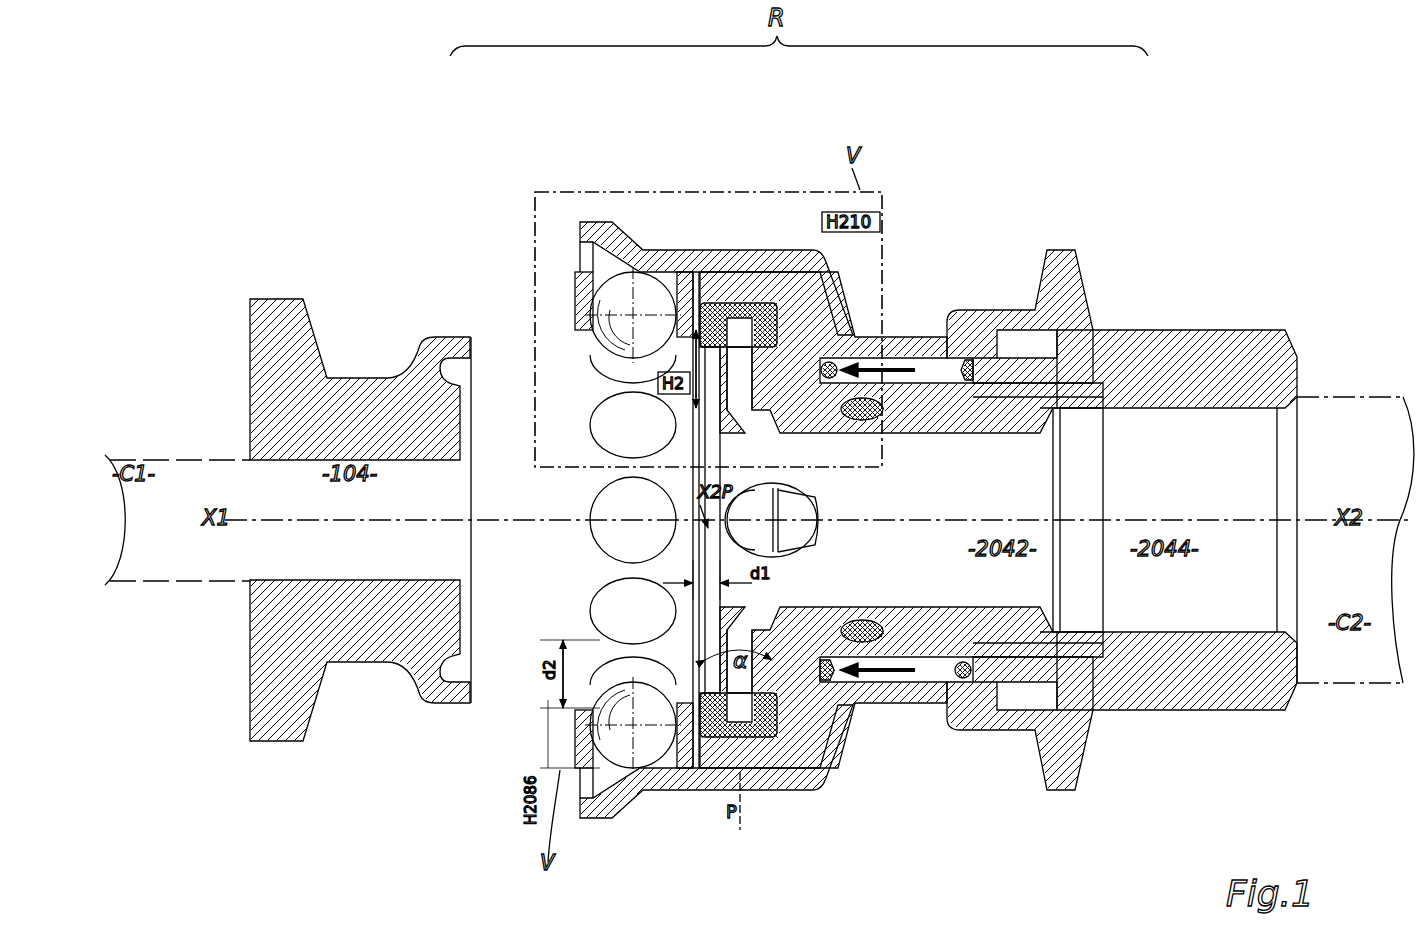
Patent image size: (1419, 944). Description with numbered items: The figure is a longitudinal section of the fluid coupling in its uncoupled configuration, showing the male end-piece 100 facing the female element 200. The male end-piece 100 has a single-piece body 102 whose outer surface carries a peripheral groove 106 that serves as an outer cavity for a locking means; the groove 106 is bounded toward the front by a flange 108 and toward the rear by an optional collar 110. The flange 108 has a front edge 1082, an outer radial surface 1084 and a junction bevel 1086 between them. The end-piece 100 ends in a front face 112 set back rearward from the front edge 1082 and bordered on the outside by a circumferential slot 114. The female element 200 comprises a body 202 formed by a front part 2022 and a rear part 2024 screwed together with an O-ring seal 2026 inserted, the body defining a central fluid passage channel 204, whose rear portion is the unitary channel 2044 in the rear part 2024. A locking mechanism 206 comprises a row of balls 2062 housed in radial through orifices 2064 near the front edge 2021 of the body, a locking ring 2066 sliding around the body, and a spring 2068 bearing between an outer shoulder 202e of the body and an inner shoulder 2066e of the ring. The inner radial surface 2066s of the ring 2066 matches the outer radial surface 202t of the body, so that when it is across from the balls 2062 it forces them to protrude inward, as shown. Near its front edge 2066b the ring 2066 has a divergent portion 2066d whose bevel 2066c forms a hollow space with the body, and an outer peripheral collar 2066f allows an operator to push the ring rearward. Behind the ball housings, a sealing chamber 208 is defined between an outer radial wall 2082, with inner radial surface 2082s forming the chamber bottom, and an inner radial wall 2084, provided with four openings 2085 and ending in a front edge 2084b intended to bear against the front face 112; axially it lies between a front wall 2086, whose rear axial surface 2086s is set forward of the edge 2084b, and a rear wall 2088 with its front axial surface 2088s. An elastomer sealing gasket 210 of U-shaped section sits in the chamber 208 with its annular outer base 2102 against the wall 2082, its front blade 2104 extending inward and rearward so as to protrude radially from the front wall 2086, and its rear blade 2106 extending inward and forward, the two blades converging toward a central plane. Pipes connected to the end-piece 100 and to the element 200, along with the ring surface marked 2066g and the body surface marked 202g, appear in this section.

The male end-piece 100 is at (352, 206).
The female element 200 is at (1014, 202).
The body 102 is at (270, 650).
The peripheral groove 106 is at (358, 702).
The flange 108 is at (470, 334).
The collar 110 is at (278, 306).
The front face 112 is at (466, 628).
The circumferential slot 114 is at (456, 376).
The front edge of the flange 1082 is at (503, 708).
The outer radial surface of the flange 1084 is at (441, 708).
The junction bevel 1086 is at (478, 716).
The body 202 is at (1122, 578).
The front part 2022 is at (948, 702).
The rear part 2024 is at (1160, 692).
The central fluid passage channel 204 is at (1090, 536).
The unitary central channel 2044 is at (1168, 520).
The locking mechanism 206 is at (592, 212).
The balls 2062 is at (641, 290).
The radial through orifices 2064 is at (577, 320).
The locking ring 2066 is at (905, 722).
The front edge of the locking ring 2066b is at (578, 230).
The bevel 2066c is at (586, 273).
The divergent portion 2066d is at (626, 266).
The inner shoulder of the locking ring 2066e is at (955, 684).
The outer peripheral collar 2066f is at (1072, 256).
The body rear surface 2066g is at (1062, 692).
The inner radial surface of the locking ring 2066s is at (710, 262).
The sealing chamber 208 is at (836, 366).
The outer radial wall 2082 is at (812, 790).
The inner radial surface of the outer radial wall 2082s is at (832, 716).
The inner radial wall 2084 is at (746, 418).
The front edge of the inner radial wall 2084b is at (772, 372).
The openings 2085 is at (800, 612).
The front wall 2086 is at (700, 340).
The rear axial surface of the front wall 2086s is at (742, 778).
The rear wall 2088 is at (822, 302).
The front axial surface of the rear wall 2088s is at (762, 385).
The outer shoulder 202e is at (872, 360).
The body groove 202g is at (1062, 306).
The outer radial surface of the body 202t is at (686, 800).
The front edge of the body 2021 is at (586, 802).
The O-ring seal 2026 is at (860, 621).
The spring 2068 is at (976, 396).
The sealing gasket 210 is at (858, 99).
The annular outer base 2102 is at (742, 303).
The front blade 2104 is at (712, 270).
The rear blade 2106 is at (800, 290).